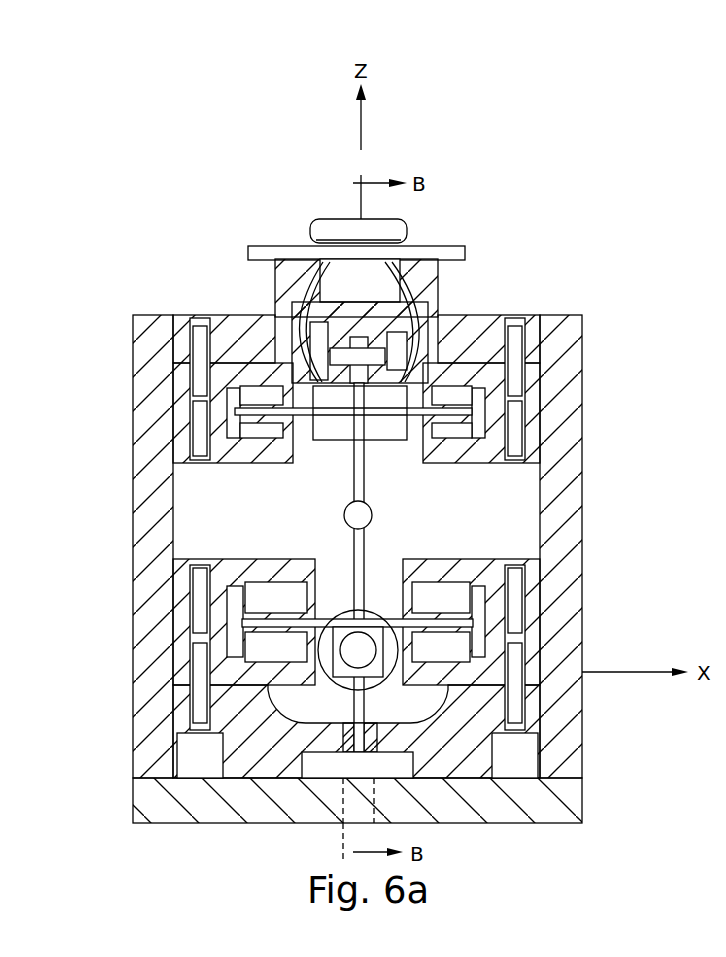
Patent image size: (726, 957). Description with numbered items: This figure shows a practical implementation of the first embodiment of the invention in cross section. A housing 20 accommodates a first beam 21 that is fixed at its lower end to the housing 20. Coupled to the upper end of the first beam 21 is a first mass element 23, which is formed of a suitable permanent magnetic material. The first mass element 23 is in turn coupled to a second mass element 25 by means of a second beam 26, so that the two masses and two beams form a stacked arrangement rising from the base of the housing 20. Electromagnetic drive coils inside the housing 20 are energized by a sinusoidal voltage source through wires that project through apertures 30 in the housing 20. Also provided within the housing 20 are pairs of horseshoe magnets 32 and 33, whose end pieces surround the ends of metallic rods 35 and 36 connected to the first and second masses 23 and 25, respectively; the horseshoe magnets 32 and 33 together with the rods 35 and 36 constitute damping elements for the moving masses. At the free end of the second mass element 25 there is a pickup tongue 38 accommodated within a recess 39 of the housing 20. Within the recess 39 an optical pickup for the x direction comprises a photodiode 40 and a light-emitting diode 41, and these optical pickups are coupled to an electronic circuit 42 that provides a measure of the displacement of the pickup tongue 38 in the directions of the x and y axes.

The housing 20 is at (268, 812).
The first beam 21 is at (374, 742).
The first mass element 23 is at (342, 678).
The second mass element 25 is at (385, 428).
The second beam 26 is at (366, 556).
The apertures 30 is at (343, 514).
The horseshoe magnets 32 is at (278, 566).
The horseshoe magnets 33 is at (229, 465).
The rod 35 is at (319, 622).
The rod 36 is at (308, 418).
The pickup tongue 38 is at (361, 322).
The recess 39 is at (410, 330).
The photodiode 40 is at (396, 355).
The light-emitting diode 41 is at (318, 348).
The electronic circuit 42 is at (340, 221).